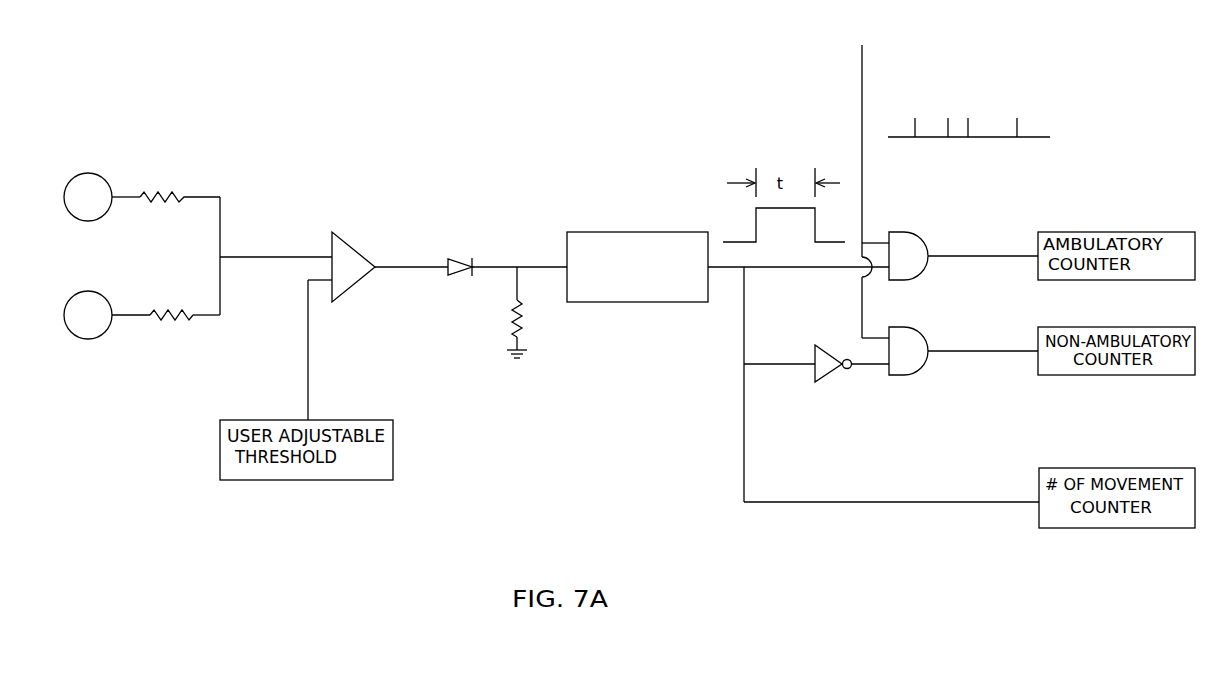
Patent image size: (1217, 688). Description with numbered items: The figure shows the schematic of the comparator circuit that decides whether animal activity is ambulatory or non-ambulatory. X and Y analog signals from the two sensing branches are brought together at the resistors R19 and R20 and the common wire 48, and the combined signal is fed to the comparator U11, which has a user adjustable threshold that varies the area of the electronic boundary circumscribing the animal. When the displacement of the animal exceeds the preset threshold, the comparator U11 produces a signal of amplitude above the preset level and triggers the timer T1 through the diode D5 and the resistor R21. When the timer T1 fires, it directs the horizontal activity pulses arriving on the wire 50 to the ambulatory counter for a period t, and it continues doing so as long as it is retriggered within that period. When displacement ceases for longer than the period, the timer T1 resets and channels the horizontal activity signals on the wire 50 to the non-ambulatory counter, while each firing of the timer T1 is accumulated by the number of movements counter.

The common wire 48 is at (118, 193).
The wire 50 is at (862, 93).
The resistor R19 is at (163, 187).
The resistor R20 is at (171, 327).
The comparator U11 is at (355, 264).
The diode D5 is at (459, 255).
The resistor R21 is at (537, 318).
The timer T1 is at (637, 267).